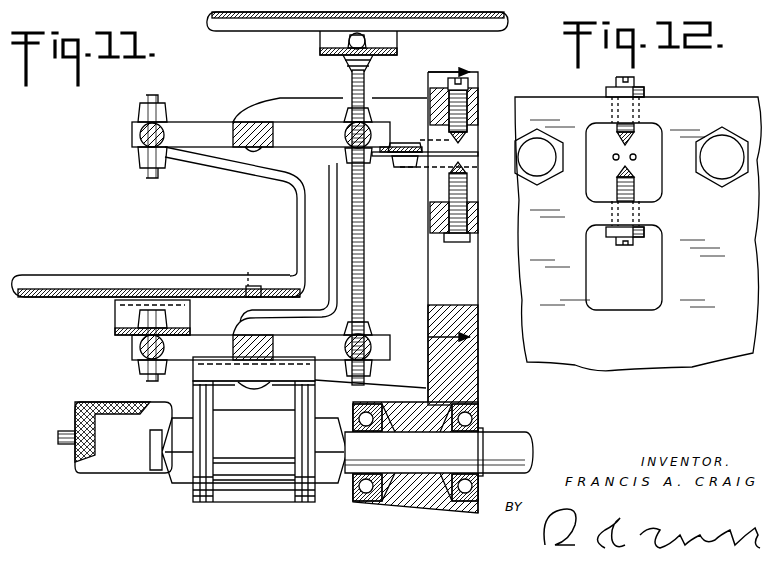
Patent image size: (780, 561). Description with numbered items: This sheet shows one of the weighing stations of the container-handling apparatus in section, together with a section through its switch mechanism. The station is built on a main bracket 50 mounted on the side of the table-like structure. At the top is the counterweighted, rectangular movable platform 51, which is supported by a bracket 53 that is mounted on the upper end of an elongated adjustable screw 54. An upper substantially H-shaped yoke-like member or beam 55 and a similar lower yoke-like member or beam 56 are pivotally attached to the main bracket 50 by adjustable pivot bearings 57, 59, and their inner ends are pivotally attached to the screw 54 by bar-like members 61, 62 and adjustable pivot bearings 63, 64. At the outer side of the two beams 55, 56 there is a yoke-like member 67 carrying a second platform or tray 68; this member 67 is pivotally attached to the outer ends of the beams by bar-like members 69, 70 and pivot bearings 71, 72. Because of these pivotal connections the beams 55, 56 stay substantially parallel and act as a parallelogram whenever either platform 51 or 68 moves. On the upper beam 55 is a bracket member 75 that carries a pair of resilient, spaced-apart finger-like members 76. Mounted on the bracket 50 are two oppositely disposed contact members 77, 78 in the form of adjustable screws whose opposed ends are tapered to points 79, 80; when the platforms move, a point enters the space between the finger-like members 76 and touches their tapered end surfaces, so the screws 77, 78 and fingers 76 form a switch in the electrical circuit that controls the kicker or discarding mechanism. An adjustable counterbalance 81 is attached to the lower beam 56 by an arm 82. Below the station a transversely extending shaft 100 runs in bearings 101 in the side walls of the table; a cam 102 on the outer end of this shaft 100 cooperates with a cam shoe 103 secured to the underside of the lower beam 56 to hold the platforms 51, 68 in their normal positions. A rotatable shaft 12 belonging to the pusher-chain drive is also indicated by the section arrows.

In FIG. 11, the rotatable shaft 12 is at (465, 208).
In FIG. 11, the main bracket 50 is at (478, 388).
In FIG. 12, the main bracket 50 is at (708, 353).
In FIG. 11, the movable platform 51 is at (214, 21).
In FIG. 11, the bracket 53 is at (322, 50).
In FIG. 11, the elongated adjustable screw 54 is at (364, 243).
In FIG. 11, the upper yoke-like member or beam 55 is at (200, 135).
In FIG. 11, the lower yoke-like member or beam 56 is at (187, 362).
In FIG. 11, the adjustable pivot bearing 57 is at (252, 122).
In FIG. 11, the adjustable pivot bearing 59 is at (250, 276).
In FIG. 11, the bar-like member 61 is at (374, 127).
In FIG. 11, the bar-like member 62 is at (372, 345).
In FIG. 11, the adjustable pivot bearing 63 is at (335, 128).
In FIG. 11, the adjustable pivot bearing 64 is at (345, 333).
In FIG. 11, the yoke-like member 67 is at (303, 190).
In FIG. 11, the second platform or tray 68 is at (60, 273).
In FIG. 11, the bar-like member 69 is at (132, 137).
In FIG. 11, the bar-like member 70 is at (132, 345).
In FIG. 11, the pivot bearing 71 is at (132, 128).
In FIG. 11, the pivot bearing 72 is at (136, 360).
In FIG. 11, the bracket member 75 is at (382, 160).
In FIG. 11, the finger-like members 76 is at (418, 160).
In FIG. 12, the finger-like members 76 is at (636, 155).
In FIG. 11, the contact member 77 is at (470, 100).
In FIG. 12, the contact member 77 is at (645, 90).
In FIG. 11, the contact member 78 is at (455, 237).
In FIG. 12, the contact member 78 is at (636, 188).
In FIG. 11, the tapered point 79 is at (455, 133).
In FIG. 12, the tapered point 79 is at (618, 138).
In FIG. 11, the tapered point 80 is at (455, 178).
In FIG. 12, the tapered point 80 is at (634, 174).
In FIG. 11, the adjustable counterbalance 81 is at (102, 462).
In FIG. 11, the arm 82 is at (58, 436).
In FIG. 11, the transversely extending shaft 100 is at (503, 440).
In FIG. 11, the bearings 101 is at (445, 498).
In FIG. 11, the cam 102 is at (298, 502).
In FIG. 11, the cam shoe 103 is at (216, 370).